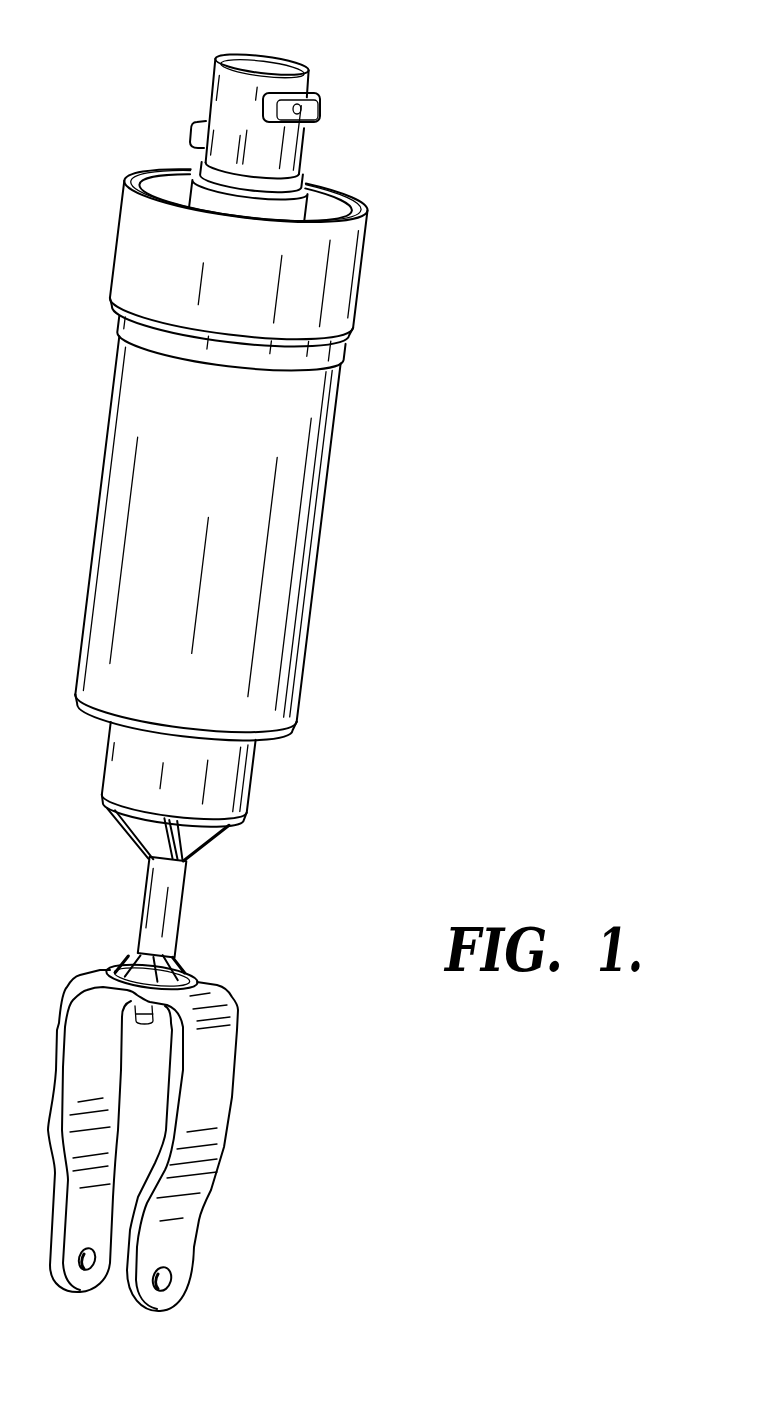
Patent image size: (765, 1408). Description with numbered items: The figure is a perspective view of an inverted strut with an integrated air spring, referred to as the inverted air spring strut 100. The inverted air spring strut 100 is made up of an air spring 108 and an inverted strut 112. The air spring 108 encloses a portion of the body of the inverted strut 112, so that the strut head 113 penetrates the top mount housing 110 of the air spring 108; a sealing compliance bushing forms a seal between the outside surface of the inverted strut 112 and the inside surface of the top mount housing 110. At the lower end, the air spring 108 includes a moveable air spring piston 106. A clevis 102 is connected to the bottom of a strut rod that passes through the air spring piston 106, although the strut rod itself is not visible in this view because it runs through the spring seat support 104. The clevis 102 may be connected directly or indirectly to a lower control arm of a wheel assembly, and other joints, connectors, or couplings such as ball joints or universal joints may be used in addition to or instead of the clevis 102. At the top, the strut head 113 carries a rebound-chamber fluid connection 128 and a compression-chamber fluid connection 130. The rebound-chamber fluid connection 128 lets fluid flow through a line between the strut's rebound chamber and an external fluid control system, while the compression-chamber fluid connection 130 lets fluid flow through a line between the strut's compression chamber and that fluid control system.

The inverted air spring strut 100 is at (522, 404).
The clevis 102 is at (244, 1065).
The spring seat support 104 is at (183, 906).
The air spring piston 106 is at (253, 778).
The air spring 108 is at (318, 513).
The top mount housing 110 is at (367, 289).
The inverted strut 112 is at (263, 49).
The strut head 113 is at (210, 90).
The rebound-chamber fluid connection 128 is at (192, 131).
The compression-chamber fluid connection 130 is at (317, 107).